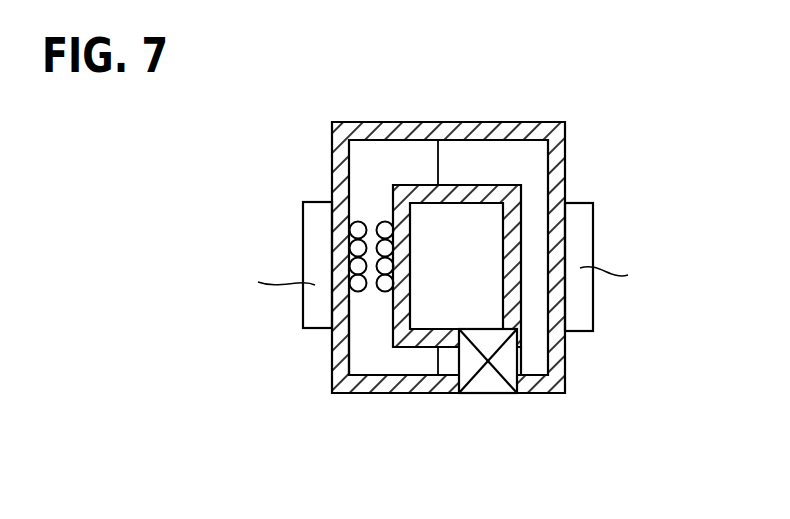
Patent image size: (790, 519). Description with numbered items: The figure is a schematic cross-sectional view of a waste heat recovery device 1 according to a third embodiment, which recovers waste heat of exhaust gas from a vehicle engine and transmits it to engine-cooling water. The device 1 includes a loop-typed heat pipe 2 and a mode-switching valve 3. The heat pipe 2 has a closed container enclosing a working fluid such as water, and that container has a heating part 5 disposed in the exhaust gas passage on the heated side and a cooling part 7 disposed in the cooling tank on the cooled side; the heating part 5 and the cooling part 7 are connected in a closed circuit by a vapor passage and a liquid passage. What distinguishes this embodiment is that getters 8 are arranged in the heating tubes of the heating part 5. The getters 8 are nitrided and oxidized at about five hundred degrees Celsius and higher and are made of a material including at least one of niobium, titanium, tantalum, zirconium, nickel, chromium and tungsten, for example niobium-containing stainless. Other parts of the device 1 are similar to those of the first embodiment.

The waste heat recovery device 1 is at (444, 246).
The loop-typed heat pipe 2 is at (371, 100).
The mode-switching valve 3 is at (470, 368).
The heating part 5 is at (362, 345).
The cooling part 7 is at (535, 228).
The getters 8 is at (351, 228).